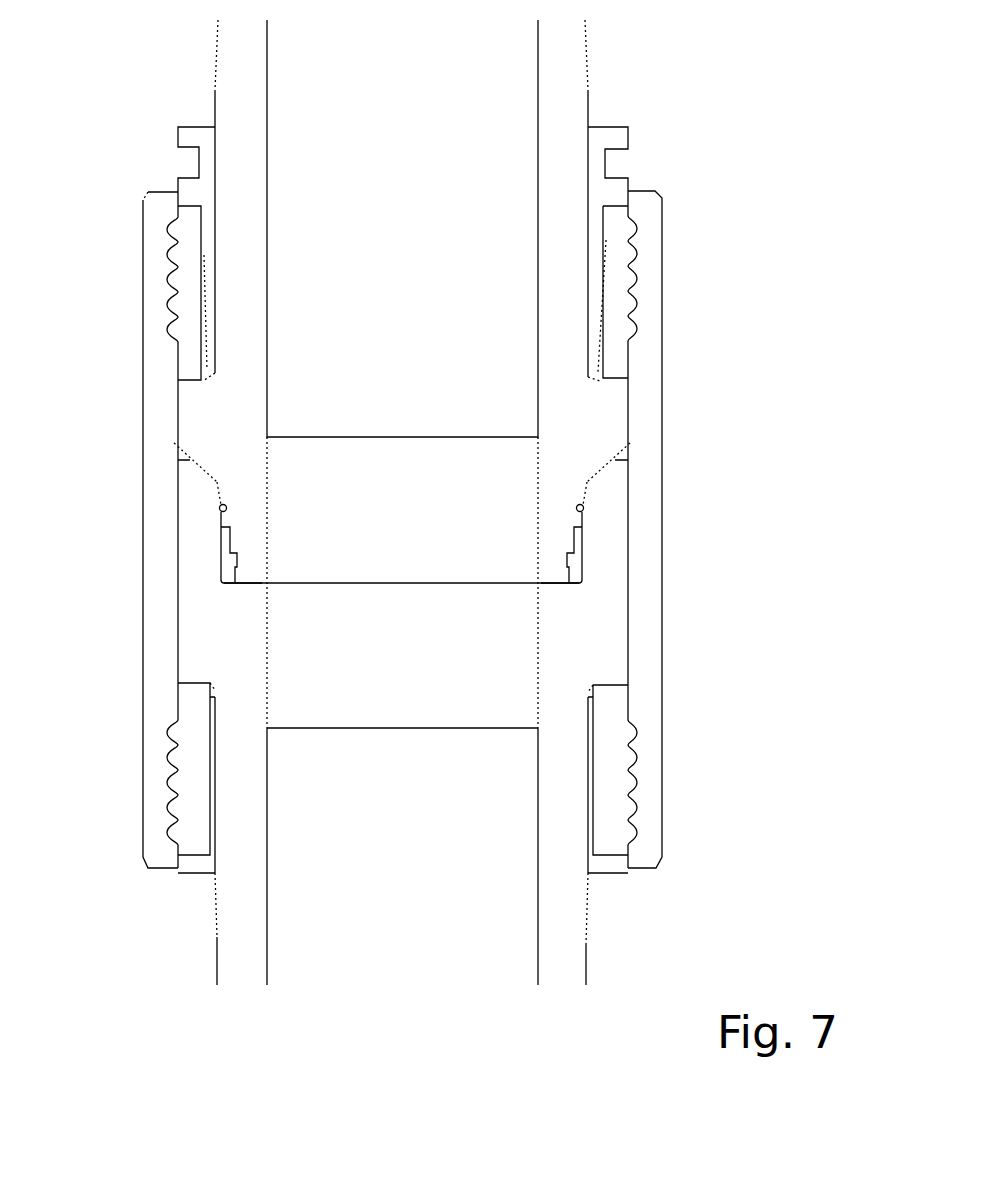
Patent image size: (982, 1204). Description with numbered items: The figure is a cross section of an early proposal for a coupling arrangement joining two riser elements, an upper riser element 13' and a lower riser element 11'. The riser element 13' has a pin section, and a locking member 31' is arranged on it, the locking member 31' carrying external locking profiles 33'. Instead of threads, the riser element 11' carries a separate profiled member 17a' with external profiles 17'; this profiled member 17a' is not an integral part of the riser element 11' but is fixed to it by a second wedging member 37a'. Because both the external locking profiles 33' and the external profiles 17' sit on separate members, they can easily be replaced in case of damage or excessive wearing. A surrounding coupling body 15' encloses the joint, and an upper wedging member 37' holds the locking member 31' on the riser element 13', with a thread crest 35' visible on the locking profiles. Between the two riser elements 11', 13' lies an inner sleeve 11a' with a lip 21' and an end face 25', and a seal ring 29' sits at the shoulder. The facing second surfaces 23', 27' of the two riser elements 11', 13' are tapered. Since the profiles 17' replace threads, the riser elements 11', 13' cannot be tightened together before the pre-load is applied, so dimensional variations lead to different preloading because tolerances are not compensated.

The riser element 13' is at (452, 228).
The upper threaded ring 37' is at (467, 232).
The thread crest 35' is at (696, 262).
The locking member 31' is at (698, 278).
The external locking profiles 33' is at (467, 300).
The coupling body 15' is at (451, 529).
The seal ring 29' is at (479, 513).
The inner sleeve 11a' is at (523, 582).
The external profiles 17' is at (699, 766).
The profiled member 17a' is at (474, 769).
The second wedging member 37a' is at (479, 791).
The riser element 11' is at (482, 841).
The second surface 23' is at (335, 422).
The second surface 27' is at (333, 475).
The lip 21' is at (321, 547).
The end face 25' is at (309, 613).